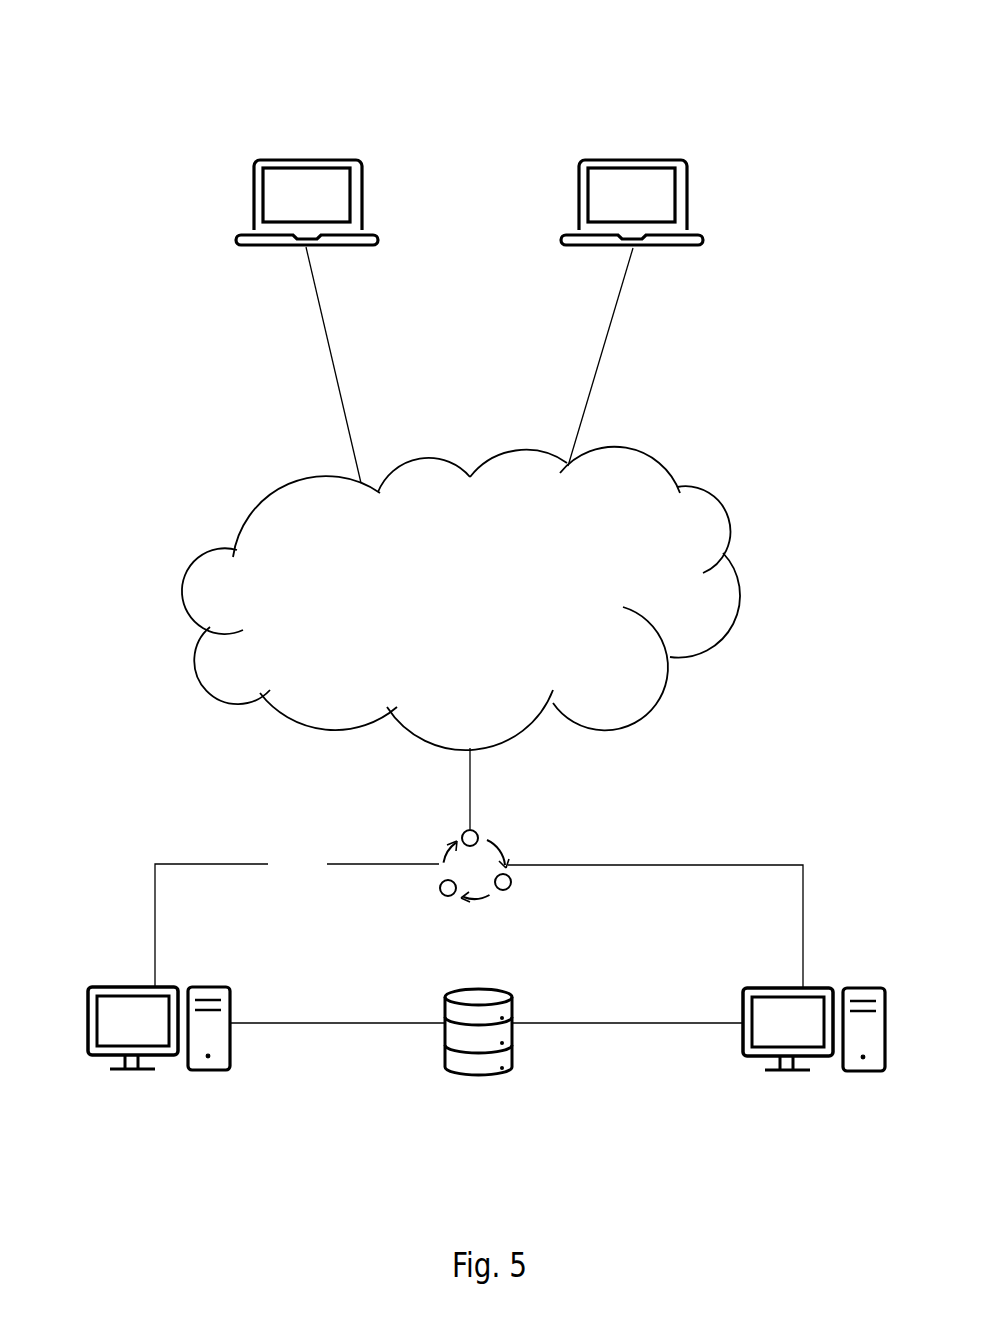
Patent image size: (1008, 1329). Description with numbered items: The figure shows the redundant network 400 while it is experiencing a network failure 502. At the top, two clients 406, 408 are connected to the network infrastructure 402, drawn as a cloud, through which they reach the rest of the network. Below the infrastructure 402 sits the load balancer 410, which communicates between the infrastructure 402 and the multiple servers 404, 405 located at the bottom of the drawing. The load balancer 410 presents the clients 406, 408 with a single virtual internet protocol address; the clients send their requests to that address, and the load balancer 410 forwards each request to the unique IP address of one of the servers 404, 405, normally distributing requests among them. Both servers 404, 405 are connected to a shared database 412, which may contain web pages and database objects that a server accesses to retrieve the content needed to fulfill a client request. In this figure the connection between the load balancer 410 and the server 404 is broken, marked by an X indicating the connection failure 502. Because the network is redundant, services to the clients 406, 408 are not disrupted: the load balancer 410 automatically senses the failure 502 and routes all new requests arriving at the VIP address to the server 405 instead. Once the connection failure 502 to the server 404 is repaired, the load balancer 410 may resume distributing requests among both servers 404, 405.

The redundant network 400 is at (108, 103).
The infrastructure 402 is at (461, 638).
The server 404 is at (159, 1067).
The server 405 is at (814, 1068).
The client 406 is at (307, 285).
The client 408 is at (632, 277).
The load balancer 410 is at (496, 853).
The database 412 is at (478, 1063).
The connection failure 502 is at (275, 838).